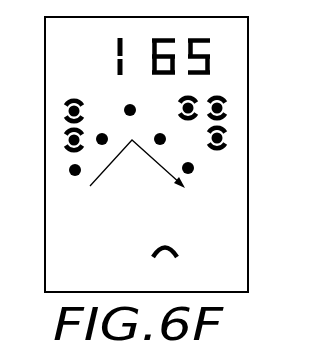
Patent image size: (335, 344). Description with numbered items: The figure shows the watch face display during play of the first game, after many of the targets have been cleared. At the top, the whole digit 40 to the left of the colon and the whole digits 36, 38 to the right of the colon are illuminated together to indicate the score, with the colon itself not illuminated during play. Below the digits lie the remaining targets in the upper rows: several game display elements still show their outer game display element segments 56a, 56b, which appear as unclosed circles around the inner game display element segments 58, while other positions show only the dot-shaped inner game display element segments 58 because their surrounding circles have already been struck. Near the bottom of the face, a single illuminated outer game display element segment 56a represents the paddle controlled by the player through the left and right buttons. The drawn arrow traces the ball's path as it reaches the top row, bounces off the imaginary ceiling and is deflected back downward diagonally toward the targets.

The whole digit 36 is at (211, 66).
The whole digit 40 is at (118, 69).
The whole digit 38 is at (152, 70).
The inner game display element segment 58 is at (126, 110).
The outer game display element segment 56a is at (63, 104).
The outer game display element segment 56b is at (228, 115).